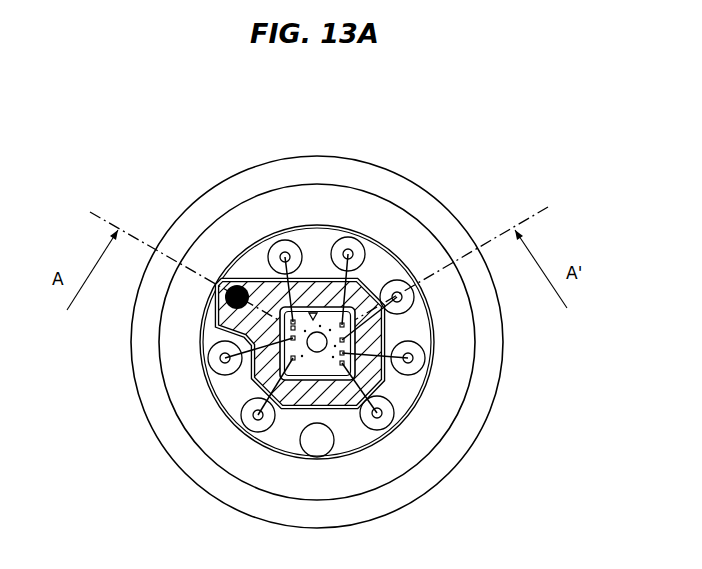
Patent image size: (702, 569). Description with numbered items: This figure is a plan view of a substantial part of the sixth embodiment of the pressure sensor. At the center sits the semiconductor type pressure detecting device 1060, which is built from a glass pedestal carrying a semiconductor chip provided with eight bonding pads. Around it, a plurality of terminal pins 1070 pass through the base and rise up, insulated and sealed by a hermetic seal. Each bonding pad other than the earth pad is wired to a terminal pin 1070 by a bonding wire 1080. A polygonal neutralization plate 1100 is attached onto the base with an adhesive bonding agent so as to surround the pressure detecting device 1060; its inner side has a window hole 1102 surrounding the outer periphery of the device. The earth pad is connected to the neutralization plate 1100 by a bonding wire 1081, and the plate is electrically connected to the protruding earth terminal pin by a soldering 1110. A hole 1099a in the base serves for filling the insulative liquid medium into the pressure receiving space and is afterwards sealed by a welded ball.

The semiconductor type pressure detecting device 1060 is at (313, 315).
The terminal pin 1070 is at (392, 420).
The bonding wire 1080 is at (360, 250).
The bonding wire 1081 is at (291, 328).
The hole 1099a is at (333, 447).
The neutralization plate 1100 is at (267, 287).
The window hole 1102 is at (344, 325).
The soldering 1110 is at (232, 286).